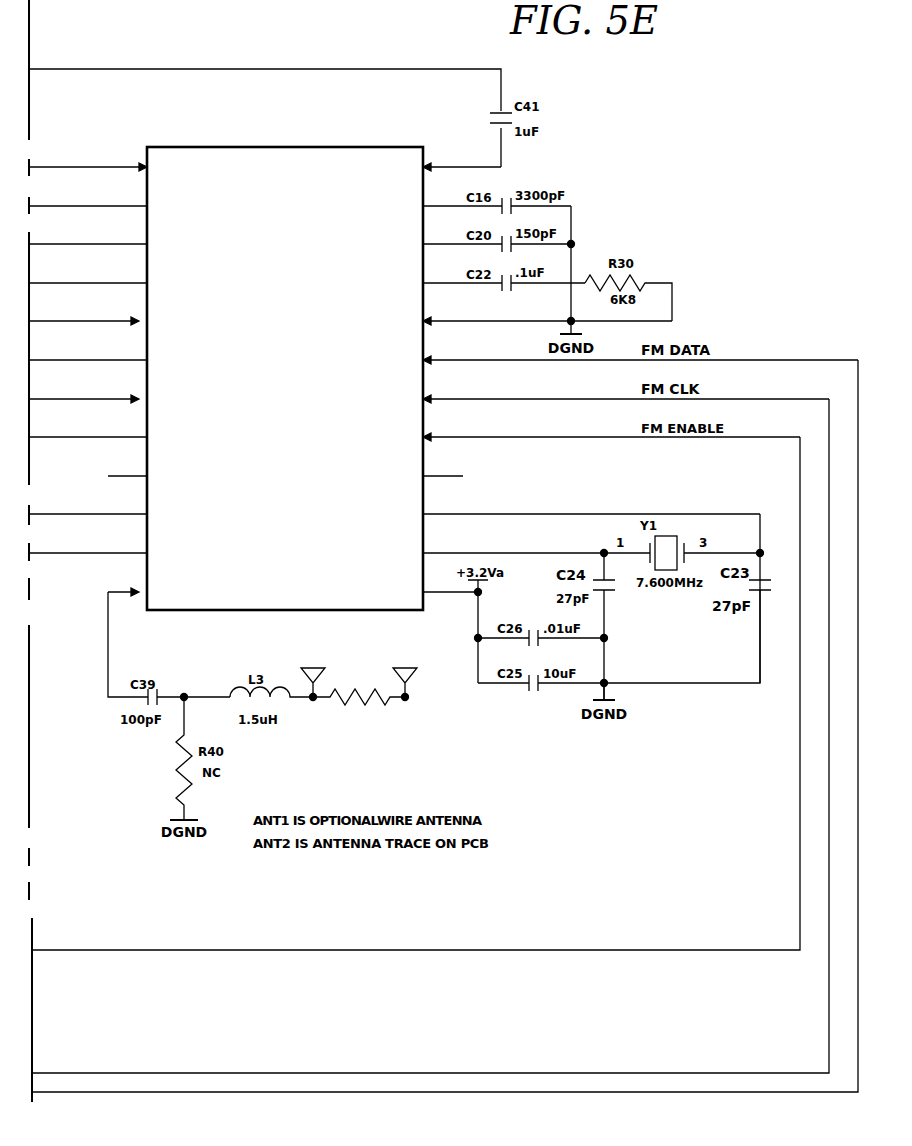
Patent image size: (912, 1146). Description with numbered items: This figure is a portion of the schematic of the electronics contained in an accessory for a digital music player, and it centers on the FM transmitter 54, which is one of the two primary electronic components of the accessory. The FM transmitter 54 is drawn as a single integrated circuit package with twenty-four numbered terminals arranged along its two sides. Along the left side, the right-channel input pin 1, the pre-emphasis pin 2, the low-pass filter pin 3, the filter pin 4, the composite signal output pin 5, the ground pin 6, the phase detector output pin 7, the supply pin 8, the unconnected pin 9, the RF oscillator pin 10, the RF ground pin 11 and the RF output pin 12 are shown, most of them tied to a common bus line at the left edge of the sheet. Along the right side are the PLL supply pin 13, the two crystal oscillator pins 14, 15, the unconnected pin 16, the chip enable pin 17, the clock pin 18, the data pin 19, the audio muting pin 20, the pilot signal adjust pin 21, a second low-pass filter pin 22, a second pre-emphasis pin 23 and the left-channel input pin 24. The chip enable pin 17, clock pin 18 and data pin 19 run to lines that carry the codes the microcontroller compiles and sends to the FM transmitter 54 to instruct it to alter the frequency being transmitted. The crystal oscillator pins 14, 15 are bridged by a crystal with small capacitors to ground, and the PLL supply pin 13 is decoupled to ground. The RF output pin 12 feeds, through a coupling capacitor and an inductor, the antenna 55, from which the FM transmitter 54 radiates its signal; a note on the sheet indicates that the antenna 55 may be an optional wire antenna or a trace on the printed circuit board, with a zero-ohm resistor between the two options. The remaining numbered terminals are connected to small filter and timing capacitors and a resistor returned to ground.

The FM transmitter 54 is at (305, 126).
The antenna 55 is at (315, 724).
The R-ch input pin 1 is at (88, 162).
The pre-emphasis TC pin 2 is at (88, 199).
The LPF TC pin 3 is at (88, 237).
The filter pin 4 is at (88, 276).
The composite signal out pin 5 is at (84, 316).
The GND pin 6 is at (88, 353).
The PLL phase detector out pin 7 is at (84, 394).
The Vcc pin 8 is at (88, 430).
The N.C. pin 9 is at (127, 469).
The RF oscillator pin 10 is at (88, 507).
The RF GND pin 11 is at (88, 546).
The RF output pin 12 is at (123, 586).
The PLL Vcc pin 13 is at (450, 584).
The XTAL oscillator pin 14 is at (536, 546).
The XTAL oscillator pin 15 is at (591, 507).
The N.C. pin 16 is at (443, 469).
The chip enable pin 17 is at (611, 432).
The clock pin 18 is at (626, 394).
The data pin 19 is at (640, 355).
The audio muting pin 20 is at (547, 316).
The pilot signal adjust pin 21 is at (462, 276).
The LPF TC pin 22 is at (462, 237).
The pre-emphasis TC pin 23 is at (462, 199).
The L-ch input pin 24 is at (462, 162).